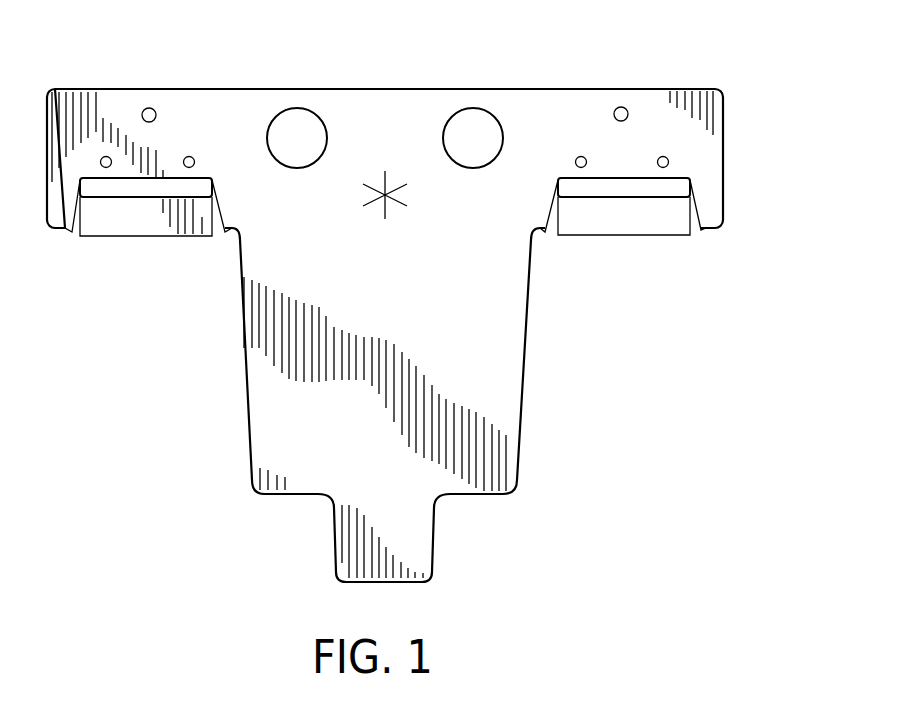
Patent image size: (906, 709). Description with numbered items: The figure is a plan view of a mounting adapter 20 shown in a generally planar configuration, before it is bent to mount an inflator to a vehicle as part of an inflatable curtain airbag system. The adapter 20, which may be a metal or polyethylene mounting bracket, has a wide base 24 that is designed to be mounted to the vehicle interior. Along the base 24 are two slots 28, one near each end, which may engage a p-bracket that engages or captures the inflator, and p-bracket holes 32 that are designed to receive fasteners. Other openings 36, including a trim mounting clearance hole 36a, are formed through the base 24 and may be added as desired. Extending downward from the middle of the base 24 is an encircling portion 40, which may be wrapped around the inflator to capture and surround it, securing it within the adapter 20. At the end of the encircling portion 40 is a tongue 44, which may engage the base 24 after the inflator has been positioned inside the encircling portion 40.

The mounting adapter 20 is at (571, 78).
The base 24 is at (677, 127).
The slots 28 is at (130, 197).
The p-bracket holes 32 is at (157, 110).
The openings 36 is at (481, 108).
The trim mounting clearance hole 36a is at (312, 108).
The encircling portion 40 is at (527, 333).
The tongue 44 is at (435, 533).